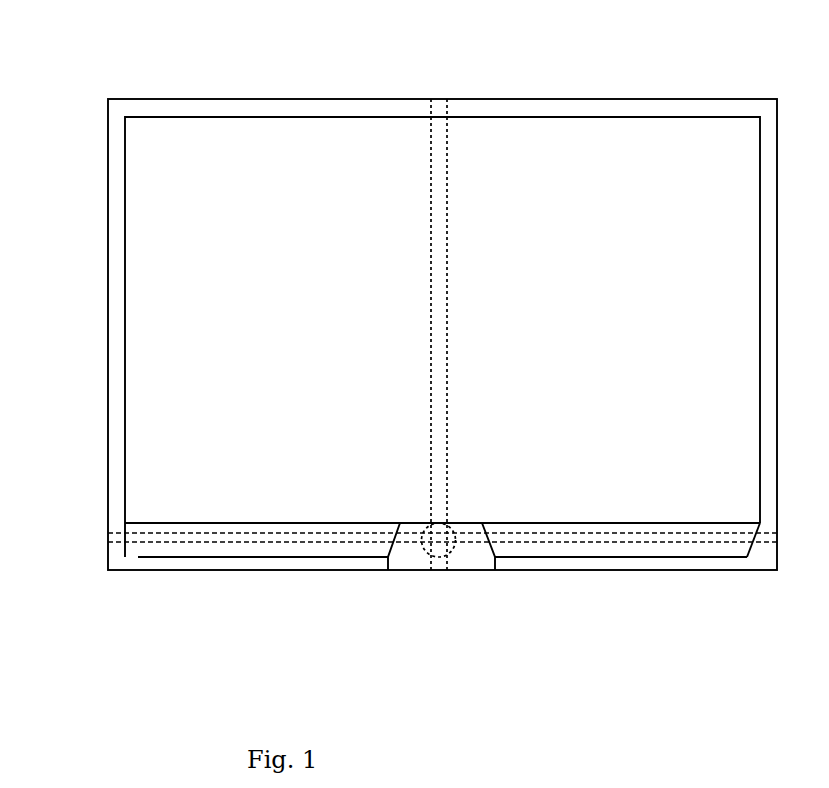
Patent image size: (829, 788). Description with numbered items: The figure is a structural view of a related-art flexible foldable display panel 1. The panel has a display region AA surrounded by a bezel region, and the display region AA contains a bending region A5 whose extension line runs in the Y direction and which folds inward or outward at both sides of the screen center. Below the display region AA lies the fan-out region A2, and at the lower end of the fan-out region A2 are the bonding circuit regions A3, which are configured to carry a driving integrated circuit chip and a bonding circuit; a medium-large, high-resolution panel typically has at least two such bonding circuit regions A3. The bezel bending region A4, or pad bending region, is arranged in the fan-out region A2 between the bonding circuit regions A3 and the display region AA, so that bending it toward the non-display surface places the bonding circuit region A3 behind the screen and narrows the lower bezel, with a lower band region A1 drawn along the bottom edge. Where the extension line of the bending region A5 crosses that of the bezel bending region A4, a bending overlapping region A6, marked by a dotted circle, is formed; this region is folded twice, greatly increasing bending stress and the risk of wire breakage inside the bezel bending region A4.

The display device 1 is at (122, 97).
The display region AA is at (142, 332).
The first region A1 is at (250, 562).
The fan-out region A2 is at (173, 527).
The bonding circuit region A3 is at (223, 558).
The bezel bending region A4 is at (140, 557).
The bending region A5 is at (447, 187).
The bending overlapping region A6 is at (433, 540).